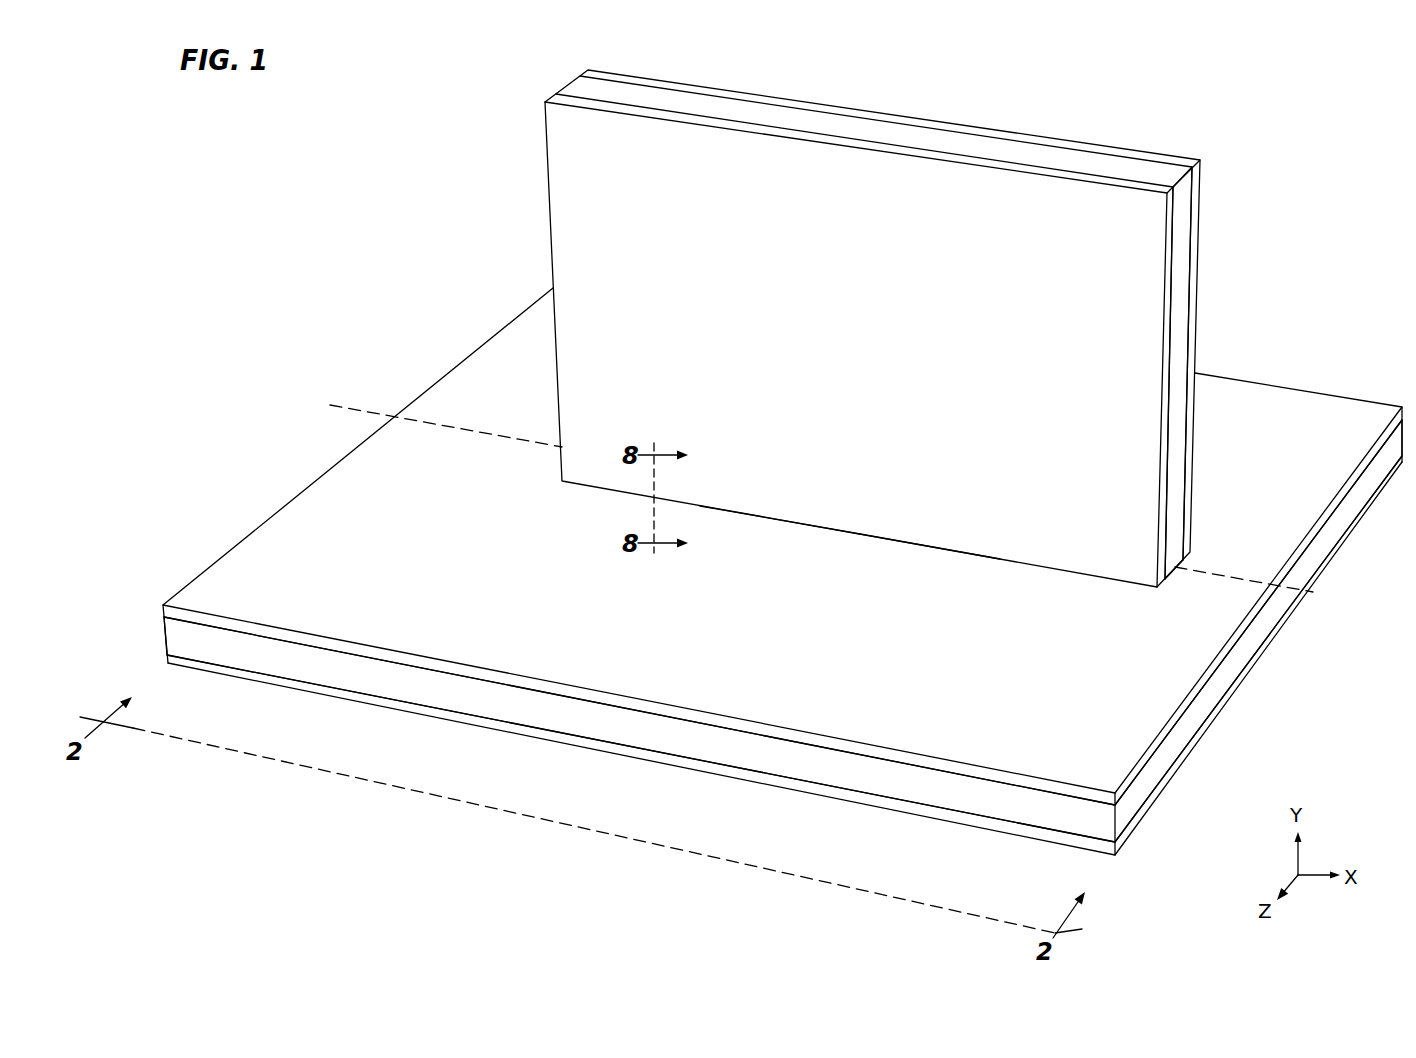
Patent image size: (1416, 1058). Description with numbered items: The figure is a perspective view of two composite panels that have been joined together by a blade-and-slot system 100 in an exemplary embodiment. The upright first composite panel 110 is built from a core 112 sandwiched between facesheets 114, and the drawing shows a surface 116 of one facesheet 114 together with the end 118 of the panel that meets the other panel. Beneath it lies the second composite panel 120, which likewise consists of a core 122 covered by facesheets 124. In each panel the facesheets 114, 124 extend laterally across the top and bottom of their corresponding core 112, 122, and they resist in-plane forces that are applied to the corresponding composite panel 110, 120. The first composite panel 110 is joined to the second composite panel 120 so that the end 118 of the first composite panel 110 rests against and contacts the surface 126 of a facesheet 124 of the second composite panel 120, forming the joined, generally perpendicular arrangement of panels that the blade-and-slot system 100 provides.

The blade-and-slot system 100 is at (300, 268).
The first composite panel 110 is at (1246, 262).
The core 112 is at (1177, 342).
The facesheets 114 is at (1130, 148).
The surface 116 is at (780, 495).
The end 118 is at (892, 538).
The second composite panel 120 is at (762, 806).
The core 122 is at (1200, 703).
The facesheets 124 is at (1253, 612).
The surface 126 is at (750, 660).